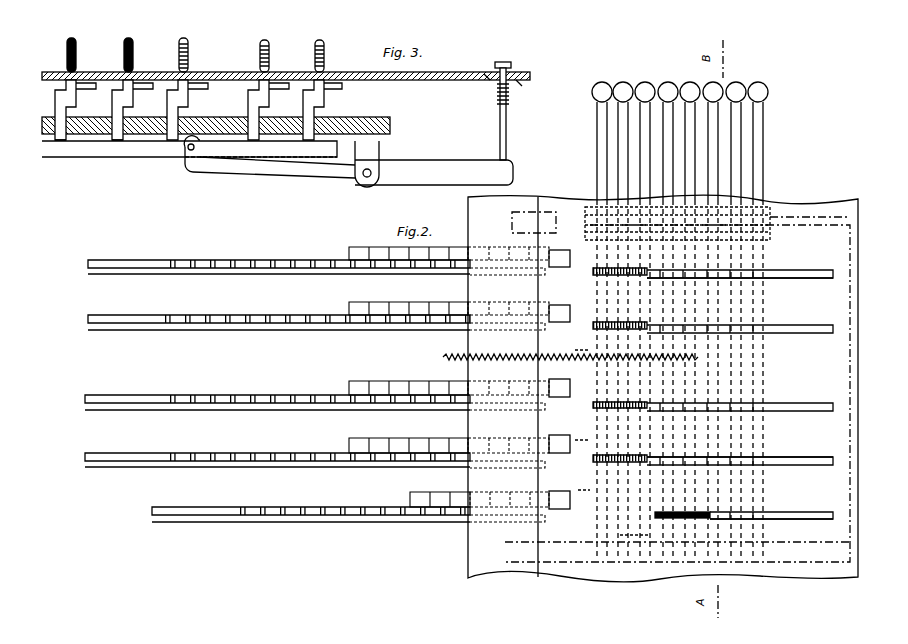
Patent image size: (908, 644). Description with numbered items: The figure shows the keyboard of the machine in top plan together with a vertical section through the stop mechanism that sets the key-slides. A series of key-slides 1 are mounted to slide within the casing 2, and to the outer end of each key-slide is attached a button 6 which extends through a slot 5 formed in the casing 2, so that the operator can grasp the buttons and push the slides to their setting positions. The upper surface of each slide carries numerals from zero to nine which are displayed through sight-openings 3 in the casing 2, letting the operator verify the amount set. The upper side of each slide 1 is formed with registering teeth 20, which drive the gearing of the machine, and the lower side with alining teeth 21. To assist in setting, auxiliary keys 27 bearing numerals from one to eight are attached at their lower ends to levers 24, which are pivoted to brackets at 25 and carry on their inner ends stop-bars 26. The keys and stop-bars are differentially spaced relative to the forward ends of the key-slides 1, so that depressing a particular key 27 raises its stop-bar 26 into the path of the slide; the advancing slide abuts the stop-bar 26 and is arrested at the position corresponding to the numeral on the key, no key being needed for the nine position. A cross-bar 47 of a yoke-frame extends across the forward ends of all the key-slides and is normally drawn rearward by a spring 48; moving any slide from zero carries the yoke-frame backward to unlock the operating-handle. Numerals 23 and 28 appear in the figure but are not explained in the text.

In FIG. 3, the key-slide 1 is at (66, 91).
In FIG. 2, the key-slide 1 is at (292, 275).
In FIG. 3, the casing 2 is at (448, 73).
In FIG. 3, the sight-opening 3 is at (86, 74).
In FIG. 2, the sight-opening 3 is at (571, 262).
In FIG. 2, the slot 5 is at (806, 279).
In FIG. 3, the button 6 is at (76, 42).
In FIG. 2, the button 6 is at (627, 277).
In FIG. 2, the registering teeth 20 is at (760, 457).
In FIG. 3, the alining teeth 21 is at (440, 170).
In FIG. 3, the link 23 is at (260, 134).
In FIG. 3, the lever 24 is at (300, 177).
In FIG. 2, the lever 24 is at (758, 170).
In FIG. 3, the bracket pivot 25 is at (368, 184).
In FIG. 2, the bracket pivot 25 is at (585, 207).
In FIG. 3, the stop-bar 26 is at (189, 155).
In FIG. 2, the stop-bar 26 is at (755, 279).
In FIG. 3, the auxiliary key 27 is at (512, 66).
In FIG. 2, the auxiliary key 27 is at (680, 83).
In FIG. 3, the stop 28 is at (60, 141).
In FIG. 2, the stop 28 is at (656, 548).
In FIG. 2, the cross-bar 47 is at (541, 198).
In FIG. 2, the spring 48 is at (570, 367).